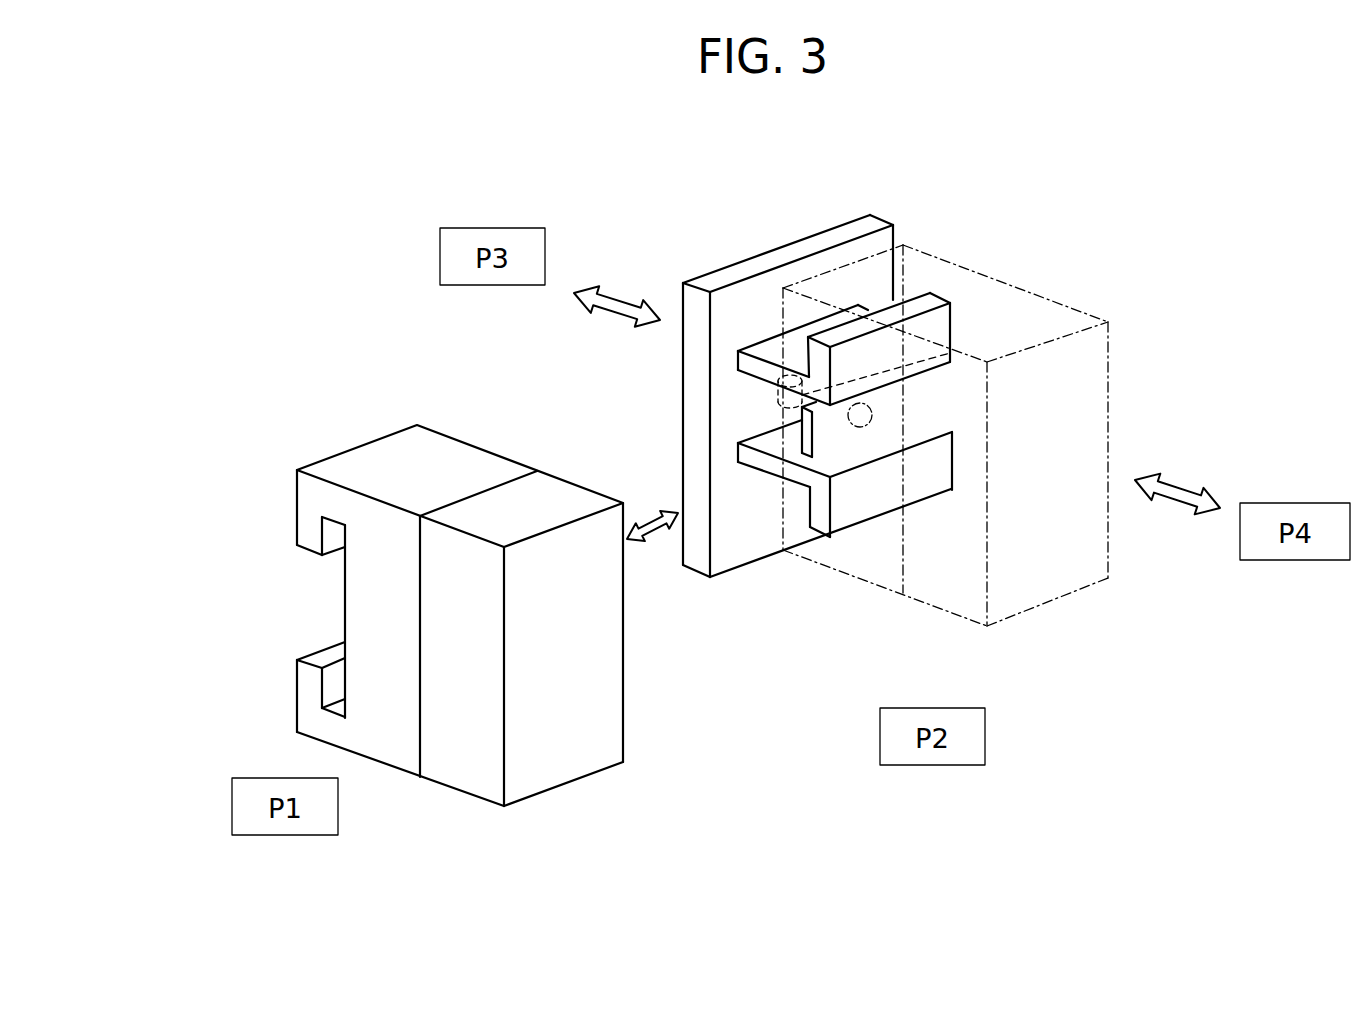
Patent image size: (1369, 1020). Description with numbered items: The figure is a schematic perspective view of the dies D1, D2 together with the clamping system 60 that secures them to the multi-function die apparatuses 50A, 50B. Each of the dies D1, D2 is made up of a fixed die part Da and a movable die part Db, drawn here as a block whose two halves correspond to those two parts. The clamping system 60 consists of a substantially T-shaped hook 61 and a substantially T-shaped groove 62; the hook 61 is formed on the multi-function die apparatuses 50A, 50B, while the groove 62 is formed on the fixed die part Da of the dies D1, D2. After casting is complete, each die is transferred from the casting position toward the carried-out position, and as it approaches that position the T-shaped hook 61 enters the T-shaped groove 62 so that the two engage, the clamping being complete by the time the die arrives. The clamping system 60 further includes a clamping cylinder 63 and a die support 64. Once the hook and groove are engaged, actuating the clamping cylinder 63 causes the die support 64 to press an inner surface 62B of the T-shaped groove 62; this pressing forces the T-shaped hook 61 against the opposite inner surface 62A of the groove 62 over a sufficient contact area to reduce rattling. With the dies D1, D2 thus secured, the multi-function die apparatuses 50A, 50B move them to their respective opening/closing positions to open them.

The multi-function die apparatus 50A is at (933, 412).
The multi-function die apparatus 50B is at (753, 208).
The clamping system 60 is at (804, 597).
The T-shaped hook 61 is at (937, 300).
The T-shaped groove 62 is at (251, 629).
The opposite inner surface of the T-shaped groove 62A is at (338, 533).
The inner surface of the T-shaped groove 62B is at (345, 613).
The clamping cylinder 63 is at (797, 400).
The die support 64 is at (893, 401).
The fixed die part Da is at (413, 466).
The movable die part Db is at (525, 497).
The die D1 is at (390, 586).
The die D2 is at (390, 586).